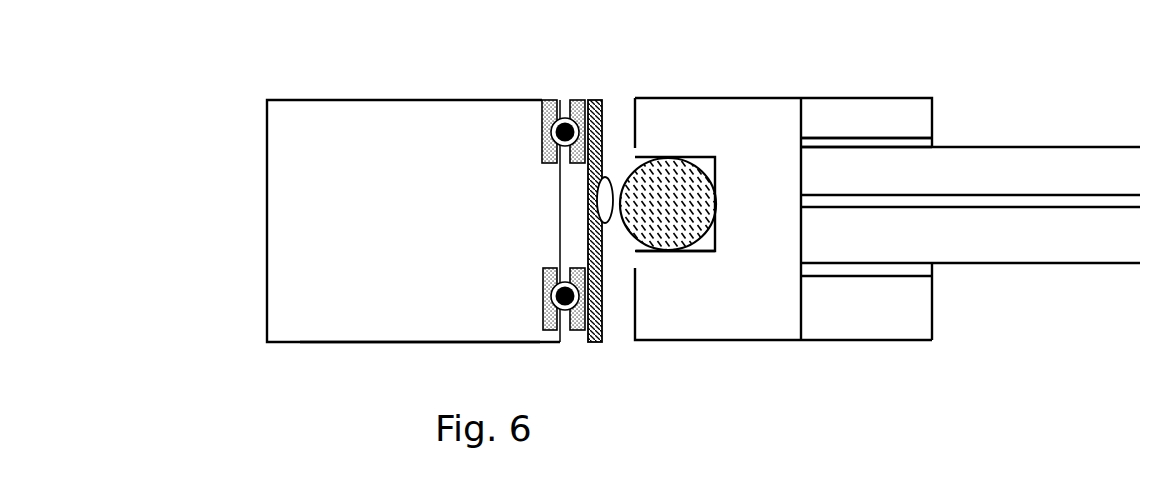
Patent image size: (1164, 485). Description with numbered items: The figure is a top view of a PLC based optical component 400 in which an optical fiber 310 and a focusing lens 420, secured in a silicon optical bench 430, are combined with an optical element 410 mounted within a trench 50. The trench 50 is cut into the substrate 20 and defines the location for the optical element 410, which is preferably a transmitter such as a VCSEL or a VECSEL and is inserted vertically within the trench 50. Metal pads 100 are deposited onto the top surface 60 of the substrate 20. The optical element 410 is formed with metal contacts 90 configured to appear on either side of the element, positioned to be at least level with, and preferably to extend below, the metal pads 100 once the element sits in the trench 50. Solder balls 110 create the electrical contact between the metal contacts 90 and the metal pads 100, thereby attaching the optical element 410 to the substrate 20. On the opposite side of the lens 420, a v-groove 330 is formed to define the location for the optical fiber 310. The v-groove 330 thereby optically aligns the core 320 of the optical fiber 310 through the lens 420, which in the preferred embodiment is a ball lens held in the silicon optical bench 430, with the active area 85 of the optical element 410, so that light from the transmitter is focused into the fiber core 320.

The substrate 20 is at (266, 261).
The PLC based optical component 400 is at (395, 91).
The solder balls 110 is at (552, 105).
The metal contacts 90 is at (578, 105).
The metal pads 100 is at (543, 130).
The active area 85 is at (607, 183).
The top surface 60 is at (447, 332).
The trench 50 is at (577, 362).
The optical element 410 is at (593, 342).
The lens 420 is at (668, 190).
The silicon optical bench 430 is at (700, 252).
The core 320 is at (808, 203).
The optical fiber 310 is at (925, 232).
The v-groove 330 is at (838, 142).